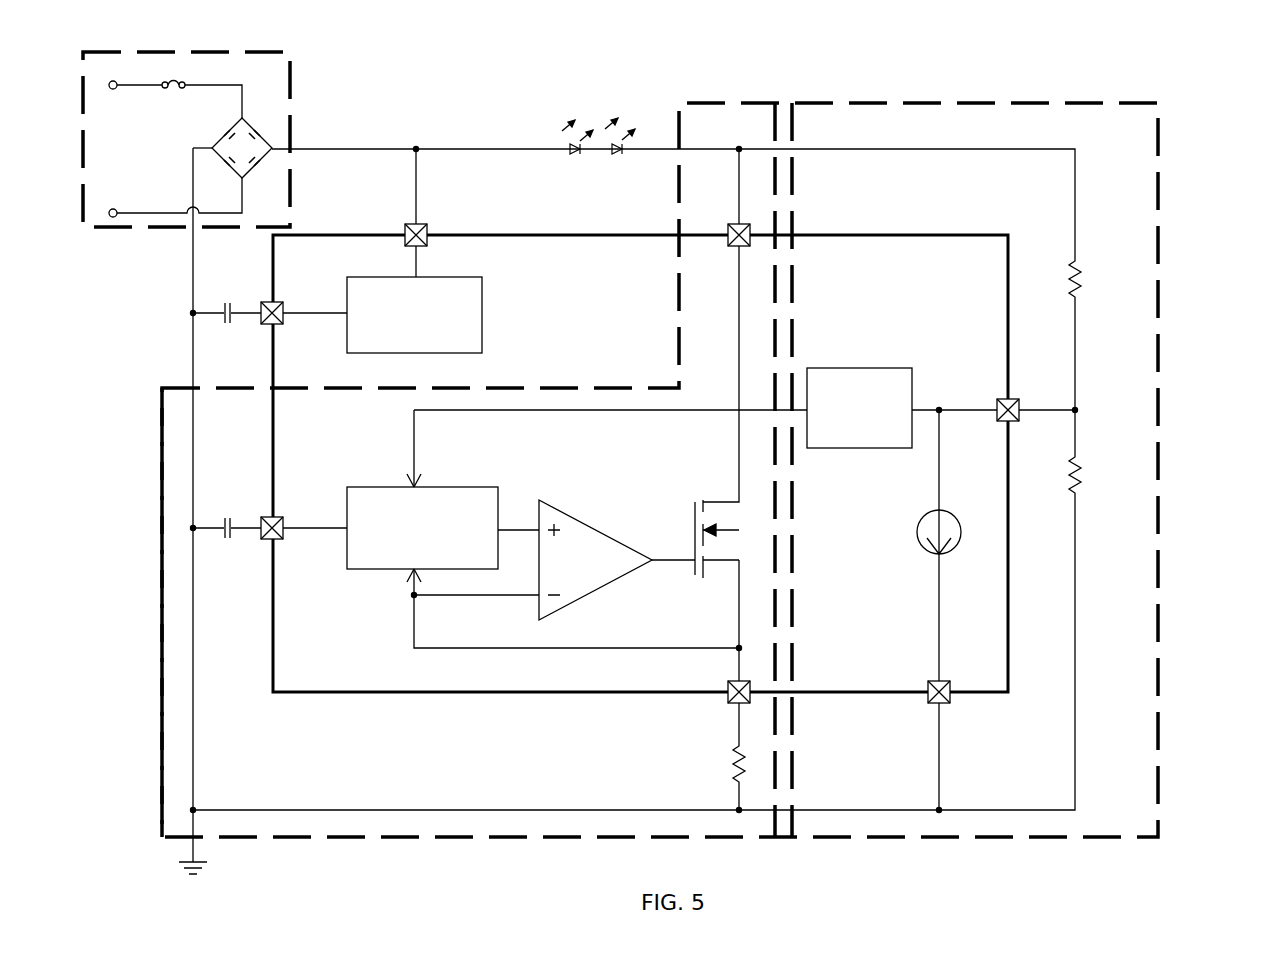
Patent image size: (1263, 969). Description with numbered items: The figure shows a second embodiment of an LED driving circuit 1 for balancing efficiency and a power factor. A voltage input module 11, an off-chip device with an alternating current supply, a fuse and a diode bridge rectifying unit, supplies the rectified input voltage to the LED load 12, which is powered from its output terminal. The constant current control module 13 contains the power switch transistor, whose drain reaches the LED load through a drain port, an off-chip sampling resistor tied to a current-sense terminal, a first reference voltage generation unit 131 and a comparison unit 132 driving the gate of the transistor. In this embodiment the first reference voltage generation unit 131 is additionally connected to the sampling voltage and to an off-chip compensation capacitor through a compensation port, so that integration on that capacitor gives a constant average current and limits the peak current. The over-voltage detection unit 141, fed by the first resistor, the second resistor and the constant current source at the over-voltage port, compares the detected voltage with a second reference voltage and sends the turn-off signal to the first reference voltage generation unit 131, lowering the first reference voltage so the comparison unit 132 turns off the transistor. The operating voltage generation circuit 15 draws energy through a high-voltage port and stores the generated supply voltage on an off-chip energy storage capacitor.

The LED driving circuit 1 is at (963, 57).
The voltage input module 11 is at (297, 115).
The LED load 12 is at (596, 152).
The constant current control module 13 is at (162, 515).
The operating voltage generation circuit 15 is at (482, 325).
The first reference voltage generation unit 131 is at (457, 487).
The comparison unit 132 is at (575, 518).
The over-voltage detection unit 141 is at (850, 368).